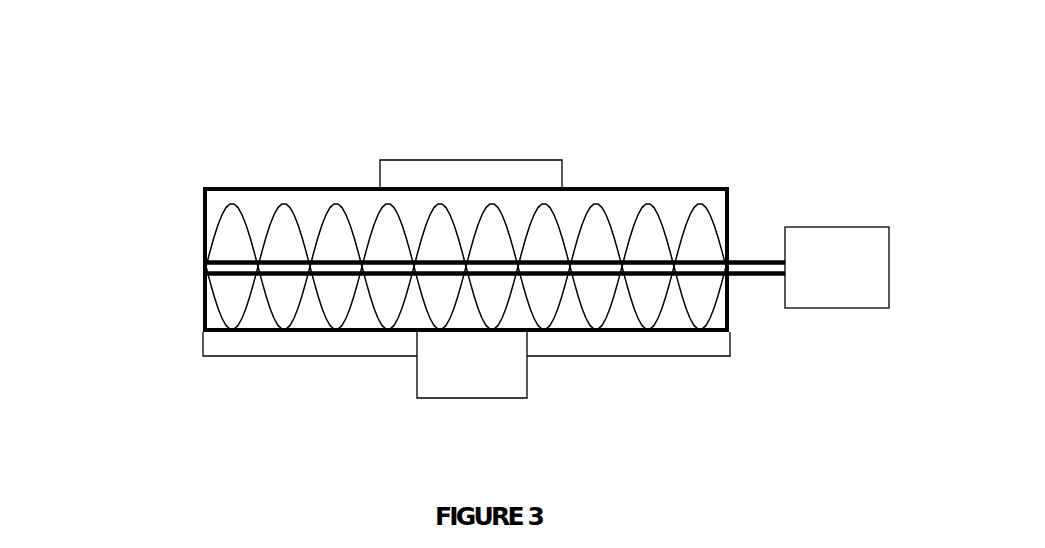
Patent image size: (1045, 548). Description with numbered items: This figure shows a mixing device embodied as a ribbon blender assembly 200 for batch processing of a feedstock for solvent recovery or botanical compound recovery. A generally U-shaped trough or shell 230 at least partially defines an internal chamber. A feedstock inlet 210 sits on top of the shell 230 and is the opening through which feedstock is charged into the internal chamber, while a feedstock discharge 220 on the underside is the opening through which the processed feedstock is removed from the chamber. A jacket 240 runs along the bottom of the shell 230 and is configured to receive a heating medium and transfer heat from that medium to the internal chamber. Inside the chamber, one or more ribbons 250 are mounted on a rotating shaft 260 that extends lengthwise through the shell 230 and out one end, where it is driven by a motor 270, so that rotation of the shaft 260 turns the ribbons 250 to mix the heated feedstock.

The ribbon blender assembly 200 is at (222, 123).
The feedstock inlet 210 is at (487, 172).
The feedstock discharge 220 is at (480, 387).
The U-shaped trough or shell 230 is at (243, 332).
The jacket 240 is at (362, 348).
The ribbons 250 is at (645, 212).
The rotating shaft 260 is at (747, 276).
The motor 270 is at (842, 250).